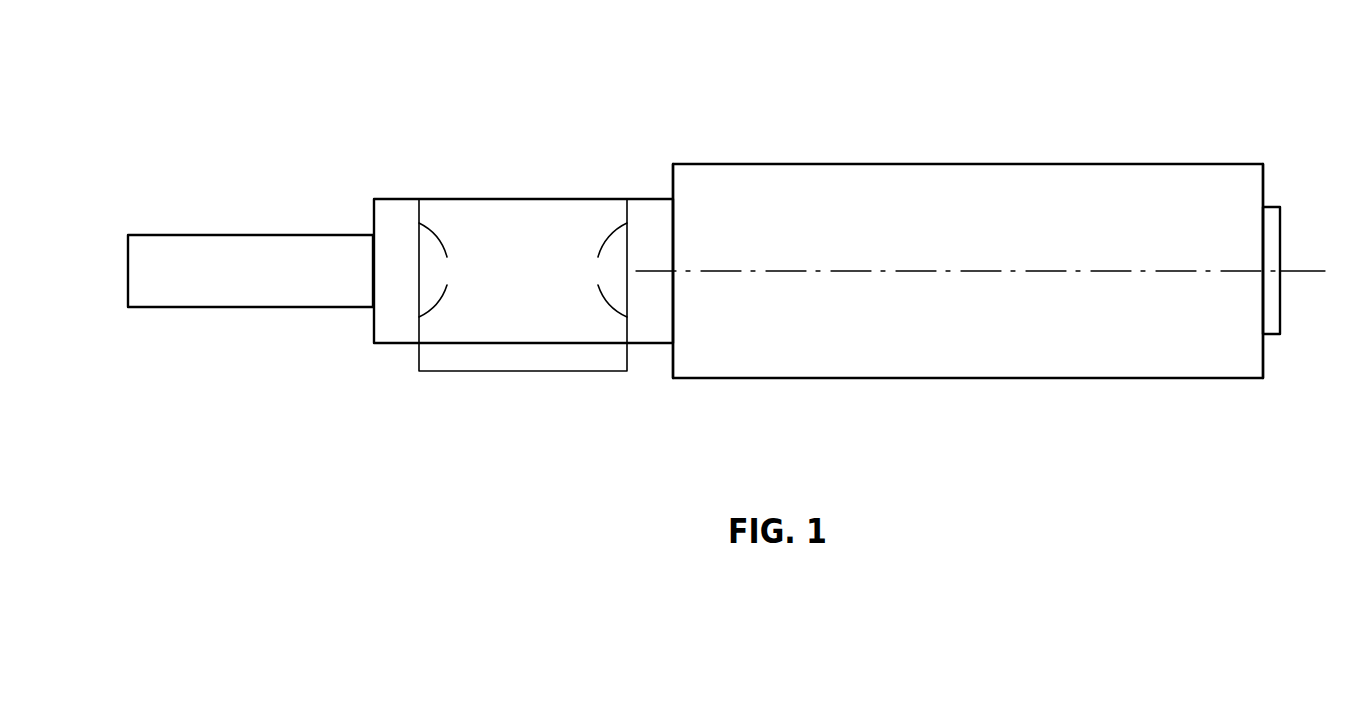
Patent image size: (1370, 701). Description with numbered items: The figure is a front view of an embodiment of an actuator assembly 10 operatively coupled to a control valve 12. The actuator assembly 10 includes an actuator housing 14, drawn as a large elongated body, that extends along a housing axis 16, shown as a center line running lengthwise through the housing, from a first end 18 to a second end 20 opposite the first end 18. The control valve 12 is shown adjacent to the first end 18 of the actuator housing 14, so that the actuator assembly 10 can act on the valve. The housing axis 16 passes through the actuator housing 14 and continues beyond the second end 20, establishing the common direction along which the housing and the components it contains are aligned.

The actuator assembly 10 is at (728, 233).
The control valve 12 is at (488, 112).
The actuator housing 14 is at (1034, 360).
The housing axis 16 is at (1310, 273).
The first end 18 is at (681, 385).
The second end 20 is at (1251, 385).